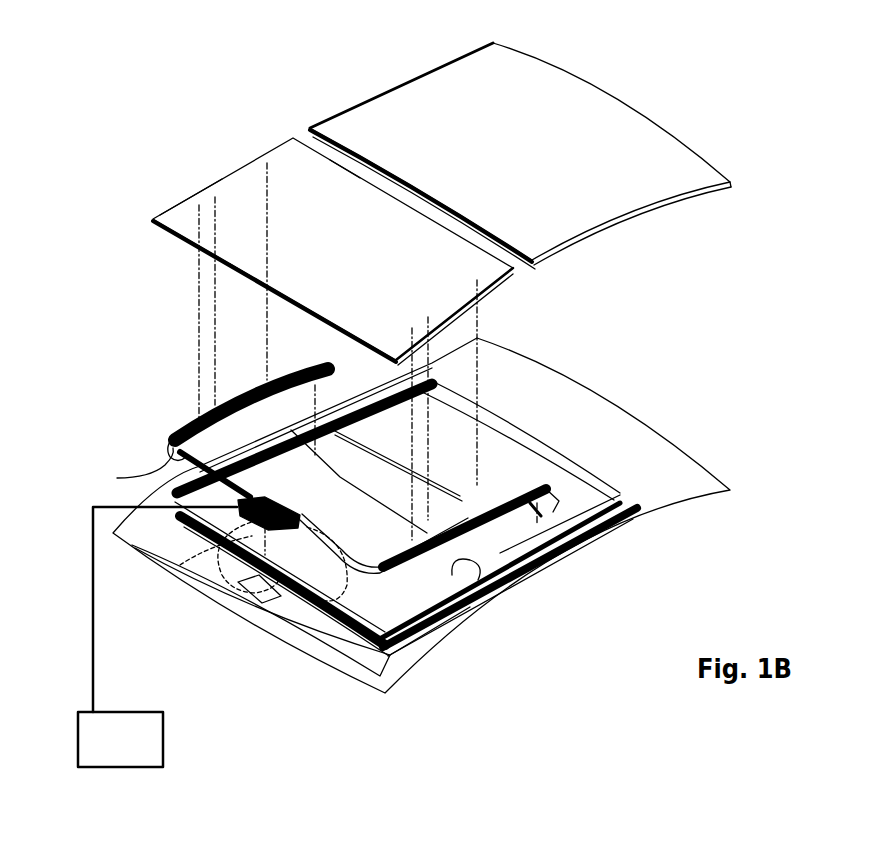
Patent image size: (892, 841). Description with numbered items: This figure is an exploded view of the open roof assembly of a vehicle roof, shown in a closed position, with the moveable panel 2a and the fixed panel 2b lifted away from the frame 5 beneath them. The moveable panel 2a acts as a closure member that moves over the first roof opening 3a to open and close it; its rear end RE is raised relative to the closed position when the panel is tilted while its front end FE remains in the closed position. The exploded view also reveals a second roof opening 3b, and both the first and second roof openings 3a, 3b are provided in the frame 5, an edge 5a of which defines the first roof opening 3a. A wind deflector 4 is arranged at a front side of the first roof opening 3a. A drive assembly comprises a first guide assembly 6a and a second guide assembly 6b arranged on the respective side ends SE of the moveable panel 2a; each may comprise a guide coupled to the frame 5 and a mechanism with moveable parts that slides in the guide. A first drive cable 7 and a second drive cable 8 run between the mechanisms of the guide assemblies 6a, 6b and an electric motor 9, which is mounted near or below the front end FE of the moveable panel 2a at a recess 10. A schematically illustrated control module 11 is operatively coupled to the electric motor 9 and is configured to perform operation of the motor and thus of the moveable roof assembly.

The moveable panel 2a is at (355, 257).
The fixed panel 2b is at (545, 163).
The first roof opening 3a is at (348, 522).
The second roof opening 3b is at (522, 479).
The wind deflector 4 is at (137, 542).
The frame 5 is at (467, 632).
The edge 5a is at (477, 593).
The first guide assembly 6a is at (487, 546).
The second guide assembly 6b is at (176, 405).
The first drive cable 7 is at (300, 615).
The second drive cable 8 is at (172, 474).
The electric motor 9 is at (180, 565).
The recess 10 is at (250, 590).
The control module 11 is at (134, 754).
The side end SE is at (225, 180).
The rear end RE is at (341, 166).
The front end FE is at (242, 290).